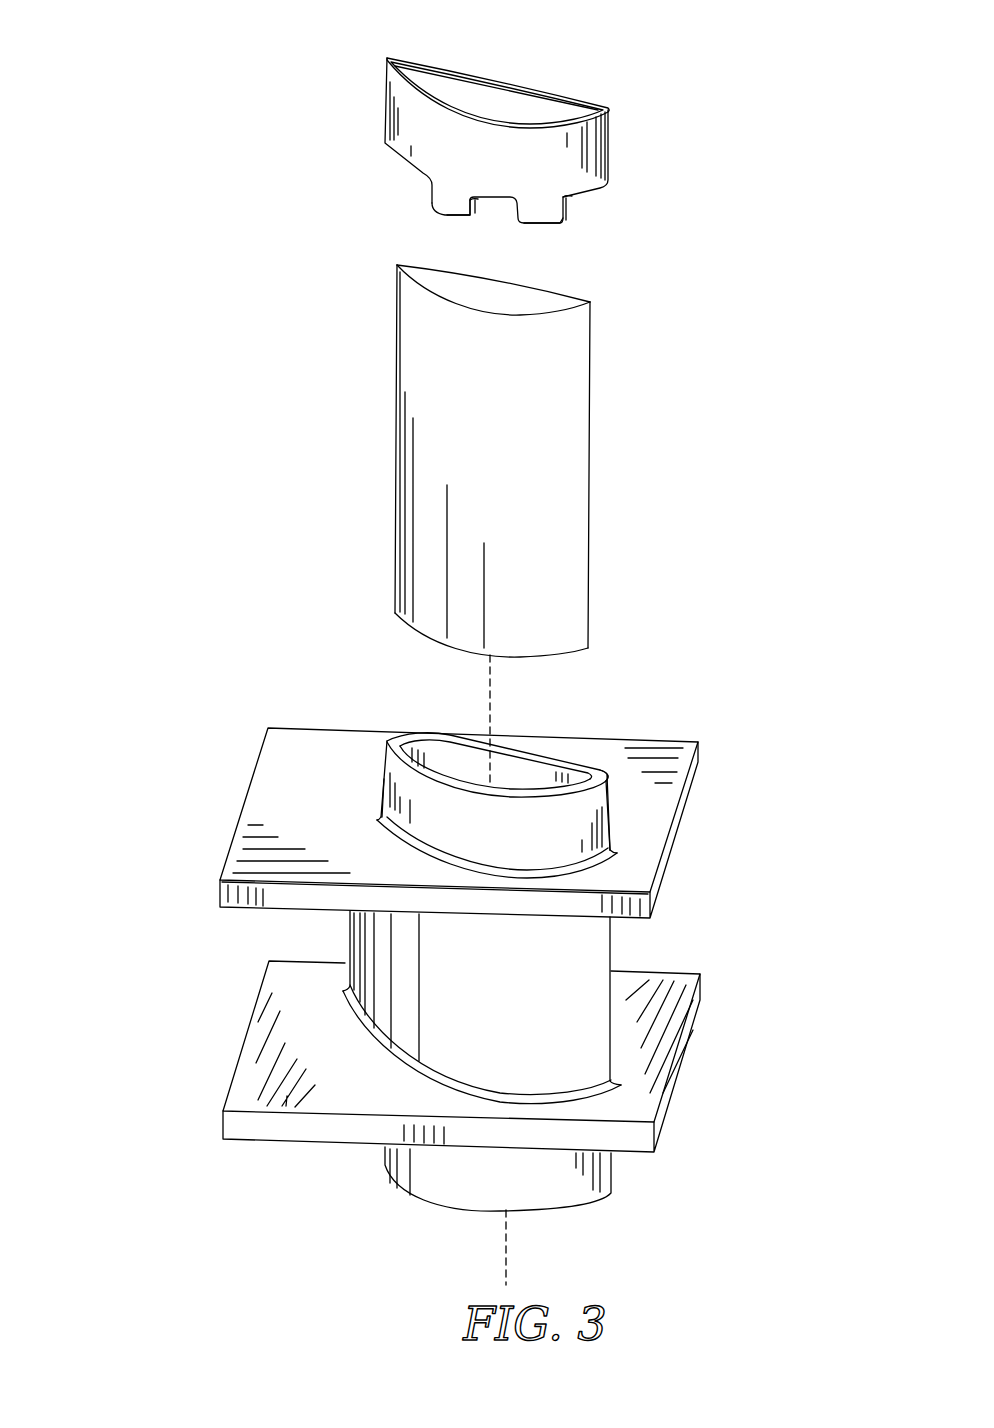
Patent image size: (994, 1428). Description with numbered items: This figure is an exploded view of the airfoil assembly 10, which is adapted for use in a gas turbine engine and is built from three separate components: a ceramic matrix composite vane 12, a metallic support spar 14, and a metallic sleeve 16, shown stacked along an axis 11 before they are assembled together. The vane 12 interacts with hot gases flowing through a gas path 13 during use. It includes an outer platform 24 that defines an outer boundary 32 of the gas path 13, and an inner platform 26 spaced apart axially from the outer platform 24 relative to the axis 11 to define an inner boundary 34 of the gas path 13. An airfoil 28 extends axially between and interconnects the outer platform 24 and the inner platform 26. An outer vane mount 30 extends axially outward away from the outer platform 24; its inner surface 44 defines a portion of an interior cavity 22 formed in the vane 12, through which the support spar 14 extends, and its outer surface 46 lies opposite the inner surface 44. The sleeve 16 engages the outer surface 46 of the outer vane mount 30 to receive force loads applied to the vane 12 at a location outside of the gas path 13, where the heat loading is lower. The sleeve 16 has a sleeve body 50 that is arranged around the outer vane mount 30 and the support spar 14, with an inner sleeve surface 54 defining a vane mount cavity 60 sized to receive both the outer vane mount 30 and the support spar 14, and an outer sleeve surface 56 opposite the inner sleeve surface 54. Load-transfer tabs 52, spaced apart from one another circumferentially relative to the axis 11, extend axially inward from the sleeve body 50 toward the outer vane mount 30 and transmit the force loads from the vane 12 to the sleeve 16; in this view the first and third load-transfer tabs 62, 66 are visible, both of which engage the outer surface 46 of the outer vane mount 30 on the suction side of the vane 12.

The airfoil assembly 10 is at (150, 141).
The axis 11 is at (504, 1243).
The vane 12 is at (156, 791).
The gas path 13 is at (284, 951).
The support spar 14 is at (372, 420).
The sleeve 16 is at (697, 98).
The interior cavity 22 is at (462, 764).
The outer platform 24 is at (711, 747).
The inner platform 26 is at (711, 983).
The airfoil 28 is at (629, 952).
The outer vane mount 30 is at (614, 757).
The outer boundary 32 is at (232, 908).
The inner boundary 34 is at (310, 1094).
The inner surface 44 is at (443, 757).
The outer surface 46 is at (443, 815).
The sleeve body 50 is at (623, 113).
The load-transfer tabs 52 is at (412, 218).
The inner sleeve surface 54 is at (487, 108).
The outer sleeve surface 56 is at (433, 130).
The vane mount cavity 60 is at (523, 98).
The first load-transfer tab 62 is at (462, 235).
The third load-transfer tab 66 is at (572, 240).